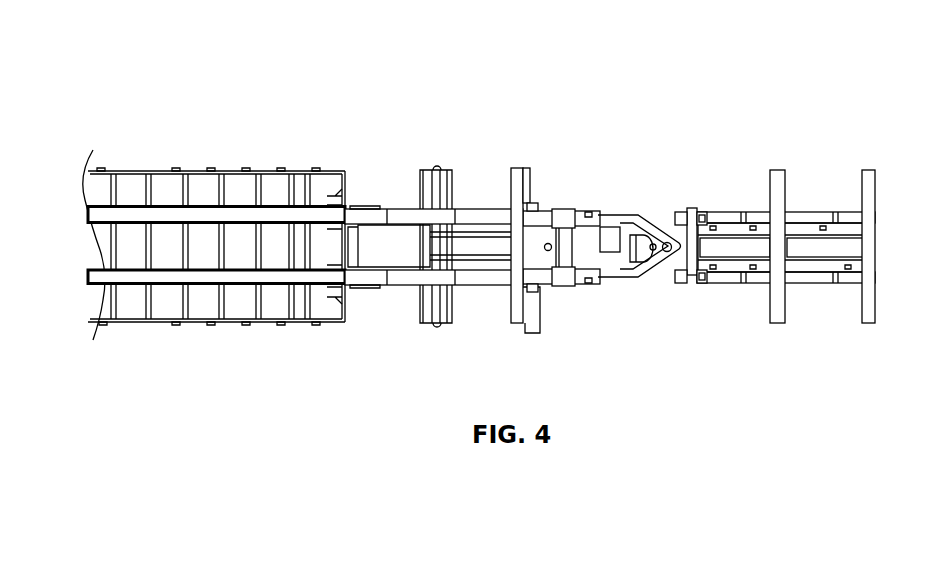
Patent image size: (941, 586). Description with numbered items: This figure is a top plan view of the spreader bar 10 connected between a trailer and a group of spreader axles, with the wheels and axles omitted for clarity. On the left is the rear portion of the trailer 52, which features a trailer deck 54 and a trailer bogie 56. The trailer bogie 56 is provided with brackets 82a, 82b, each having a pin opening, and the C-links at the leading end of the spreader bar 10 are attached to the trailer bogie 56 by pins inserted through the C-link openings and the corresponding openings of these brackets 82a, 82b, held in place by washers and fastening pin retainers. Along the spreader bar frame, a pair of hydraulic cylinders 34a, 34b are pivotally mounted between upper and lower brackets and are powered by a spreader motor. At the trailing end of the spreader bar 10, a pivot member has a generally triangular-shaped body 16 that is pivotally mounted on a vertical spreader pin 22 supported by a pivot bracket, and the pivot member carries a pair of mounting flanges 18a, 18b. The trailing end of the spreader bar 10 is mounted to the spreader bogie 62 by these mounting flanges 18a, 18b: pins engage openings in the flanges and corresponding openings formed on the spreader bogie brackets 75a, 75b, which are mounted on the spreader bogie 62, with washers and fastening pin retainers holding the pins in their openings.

The spreader bar 10 is at (138, 44).
The trailer 52 is at (233, 147).
The trailer deck 54 is at (177, 169).
The trailer bogie 56 is at (480, 206).
The bracket 82a is at (510, 284).
The bracket 82b is at (510, 208).
The hydraulic cylinder 34a is at (563, 286).
The hydraulic cylinder 34b is at (565, 210).
The pivot member body 16 is at (663, 270).
The spreader pin 22 is at (665, 240).
The mounting flange 18a is at (678, 285).
The mounting flange 18b is at (681, 212).
The spreader bogie bracket 75a is at (694, 285).
The spreader bogie bracket 75b is at (704, 213).
The spreader bogie 62 is at (812, 212).